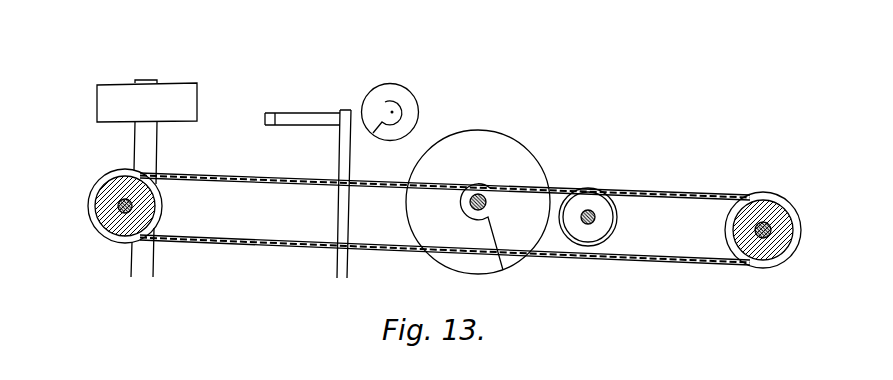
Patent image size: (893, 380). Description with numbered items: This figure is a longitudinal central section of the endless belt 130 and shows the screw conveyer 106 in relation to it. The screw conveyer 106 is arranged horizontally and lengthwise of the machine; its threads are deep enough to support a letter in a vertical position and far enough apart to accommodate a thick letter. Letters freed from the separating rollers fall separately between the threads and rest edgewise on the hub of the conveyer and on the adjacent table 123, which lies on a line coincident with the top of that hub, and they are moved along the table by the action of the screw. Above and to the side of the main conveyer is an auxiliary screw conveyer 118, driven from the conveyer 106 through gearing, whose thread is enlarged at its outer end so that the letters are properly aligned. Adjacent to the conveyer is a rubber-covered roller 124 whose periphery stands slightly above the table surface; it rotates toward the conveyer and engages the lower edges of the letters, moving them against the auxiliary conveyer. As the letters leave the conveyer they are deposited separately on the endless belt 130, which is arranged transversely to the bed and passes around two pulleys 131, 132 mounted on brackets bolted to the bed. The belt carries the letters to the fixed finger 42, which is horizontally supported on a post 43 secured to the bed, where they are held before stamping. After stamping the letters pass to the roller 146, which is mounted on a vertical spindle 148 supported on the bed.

The roller 146 is at (147, 101).
The vertical spindle 148 is at (161, 199).
The pulley 132 is at (108, 206).
The fixed finger 42 is at (339, 143).
The post 43 is at (345, 110).
The auxiliary screw conveyer 118 is at (390, 102).
The screw conveyer 106 is at (478, 202).
The roller 124 is at (604, 217).
The pulley 131 is at (778, 230).
The endless belt 130 is at (645, 193).
The table 123 is at (445, 187).